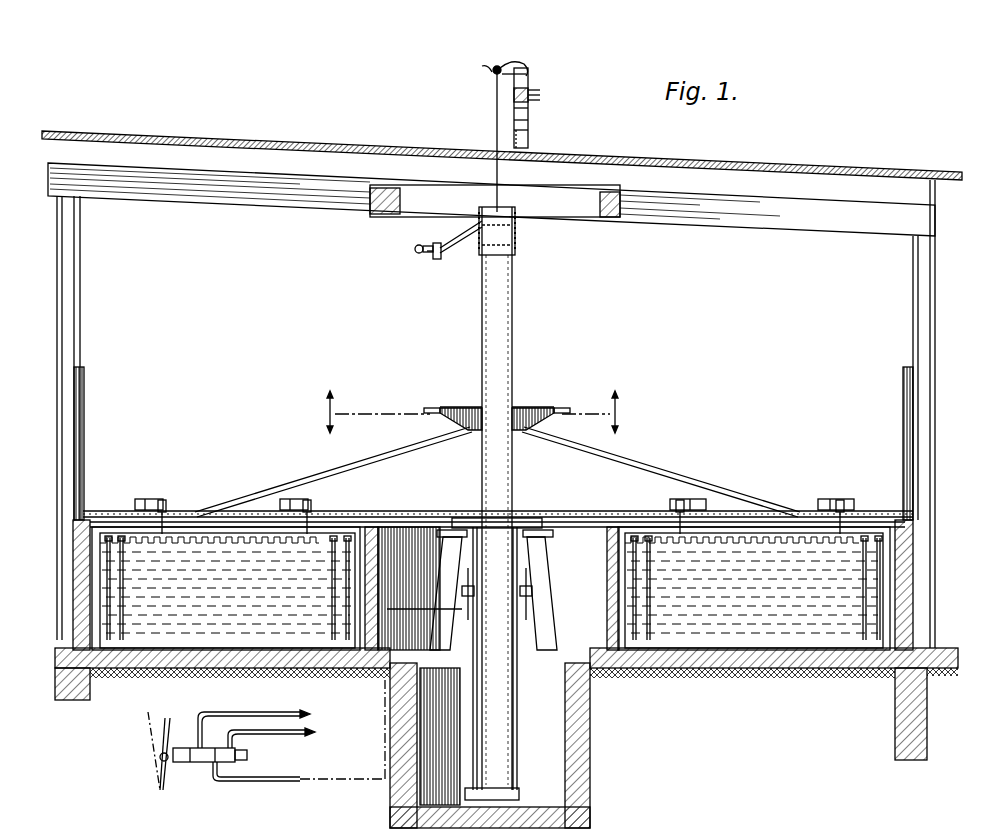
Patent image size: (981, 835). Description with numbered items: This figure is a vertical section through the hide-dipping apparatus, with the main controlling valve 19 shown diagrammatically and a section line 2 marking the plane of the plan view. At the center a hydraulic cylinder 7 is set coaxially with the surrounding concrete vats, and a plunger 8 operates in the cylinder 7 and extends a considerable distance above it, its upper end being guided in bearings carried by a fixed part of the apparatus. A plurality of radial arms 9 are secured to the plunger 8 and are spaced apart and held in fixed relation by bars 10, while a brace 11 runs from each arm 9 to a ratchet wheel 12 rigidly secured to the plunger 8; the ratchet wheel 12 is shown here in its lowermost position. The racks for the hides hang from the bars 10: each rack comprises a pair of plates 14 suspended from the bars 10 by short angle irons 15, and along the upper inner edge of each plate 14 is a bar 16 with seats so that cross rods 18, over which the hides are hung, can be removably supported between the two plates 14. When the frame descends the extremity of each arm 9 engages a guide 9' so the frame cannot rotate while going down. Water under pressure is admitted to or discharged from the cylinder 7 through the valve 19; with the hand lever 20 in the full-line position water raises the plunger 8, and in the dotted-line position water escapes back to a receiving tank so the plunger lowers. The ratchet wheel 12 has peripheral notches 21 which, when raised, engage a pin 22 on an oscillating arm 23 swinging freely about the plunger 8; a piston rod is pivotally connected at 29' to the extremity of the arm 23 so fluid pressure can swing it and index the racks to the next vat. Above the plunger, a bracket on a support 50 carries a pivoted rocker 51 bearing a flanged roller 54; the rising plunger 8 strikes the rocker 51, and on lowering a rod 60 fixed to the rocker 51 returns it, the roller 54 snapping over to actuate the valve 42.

The hydraulic cylinder 7 is at (518, 752).
The plunger 8 is at (513, 347).
The radial arms 9 is at (498, 506).
The guide 9' is at (493, 443).
The bars 10 is at (147, 499).
The brace 11 is at (360, 460).
The ratchet wheel 12 is at (530, 410).
The plates 14 is at (109, 536).
The angle irons 15 is at (166, 502).
The bar 16 is at (232, 530).
The cross rods 18 is at (78, 556).
The valve 19 is at (190, 762).
The hand lever 20 is at (168, 718).
The peripheral notches 21 is at (430, 408).
The pin 22 is at (437, 260).
The oscillating arm 23 is at (482, 222).
The pivotal connection 29' is at (406, 244).
The valve 42 is at (532, 101).
The support 50 is at (530, 119).
The rocker 51 is at (540, 66).
The flanged roller 54 is at (486, 68).
The rod 60 is at (496, 119).
The section line 2- 2 is at (468, 412).